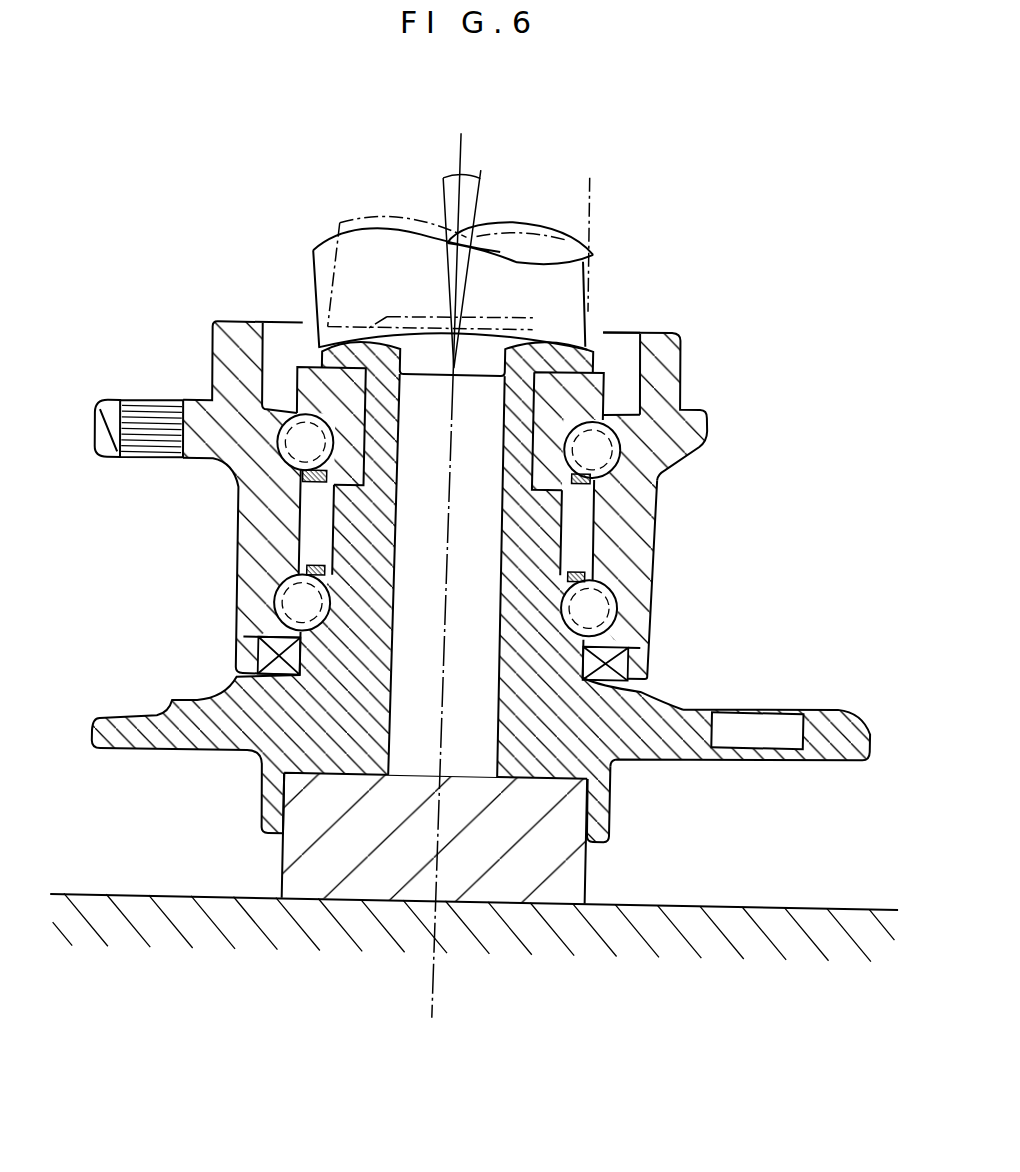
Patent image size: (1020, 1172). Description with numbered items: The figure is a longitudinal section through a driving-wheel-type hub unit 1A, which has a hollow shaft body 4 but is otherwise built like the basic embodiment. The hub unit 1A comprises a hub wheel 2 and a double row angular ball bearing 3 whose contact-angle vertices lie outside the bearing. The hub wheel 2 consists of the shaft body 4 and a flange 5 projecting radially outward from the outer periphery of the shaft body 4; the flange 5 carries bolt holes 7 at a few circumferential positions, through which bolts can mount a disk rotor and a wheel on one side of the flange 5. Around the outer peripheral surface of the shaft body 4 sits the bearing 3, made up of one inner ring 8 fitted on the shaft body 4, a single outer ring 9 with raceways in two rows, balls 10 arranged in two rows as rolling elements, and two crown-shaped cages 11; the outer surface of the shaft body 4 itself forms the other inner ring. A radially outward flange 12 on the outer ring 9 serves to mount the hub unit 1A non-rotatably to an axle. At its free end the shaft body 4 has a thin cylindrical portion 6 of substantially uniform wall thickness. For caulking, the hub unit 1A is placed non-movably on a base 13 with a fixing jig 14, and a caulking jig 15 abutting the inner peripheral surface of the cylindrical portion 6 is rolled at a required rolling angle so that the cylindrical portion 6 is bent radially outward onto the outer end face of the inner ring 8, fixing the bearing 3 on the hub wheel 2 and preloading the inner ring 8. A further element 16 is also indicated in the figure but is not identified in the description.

The hub unit 1A is at (673, 316).
The hub wheel 2 is at (561, 525).
The double row angular ball bearing 3 is at (684, 363).
The shaft body 4 is at (535, 548).
The flange 5 is at (856, 720).
The cylindrical portion 6 is at (521, 348).
The bolt holes 7 is at (765, 714).
The inner ring 8 is at (297, 369).
The outer ring 9 is at (247, 576).
The balls 10 is at (614, 458).
The crown-shaped cages 11 is at (306, 569).
The radially outward flange 12 is at (102, 405).
The base 13 is at (707, 895).
The fixing jig 14 is at (364, 896).
The caulking jig 15 is at (556, 218).
The center axis 16 is at (443, 999).